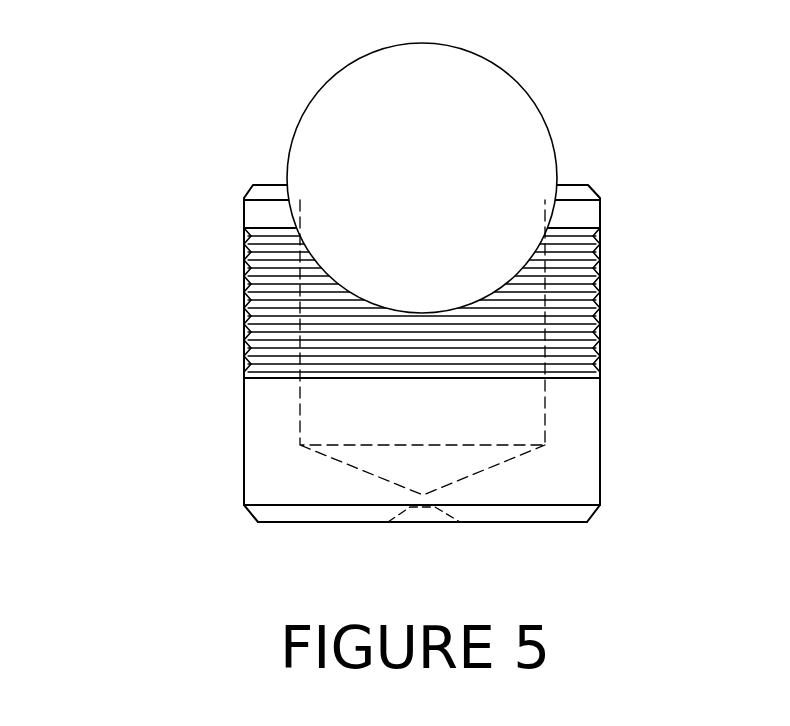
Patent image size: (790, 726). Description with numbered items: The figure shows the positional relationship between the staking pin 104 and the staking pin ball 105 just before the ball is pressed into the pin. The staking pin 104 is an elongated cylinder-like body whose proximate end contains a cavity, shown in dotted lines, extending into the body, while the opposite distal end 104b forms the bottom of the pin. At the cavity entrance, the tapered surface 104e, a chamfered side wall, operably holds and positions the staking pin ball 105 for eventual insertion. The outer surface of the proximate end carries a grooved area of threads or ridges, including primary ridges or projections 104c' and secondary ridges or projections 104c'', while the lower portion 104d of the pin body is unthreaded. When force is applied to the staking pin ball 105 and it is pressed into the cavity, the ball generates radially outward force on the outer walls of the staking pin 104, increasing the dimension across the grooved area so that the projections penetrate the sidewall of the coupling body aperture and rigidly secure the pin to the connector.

The staking pin 104 is at (181, 223).
The distal end 104b is at (348, 525).
The primary ridges or projections 104c' is at (354, 344).
The secondary ridges or projections 104c'' is at (350, 268).
The unthreaded lower body 104d is at (240, 492).
The tapered surface 104e is at (285, 188).
The staking pin ball 105 is at (348, 95).